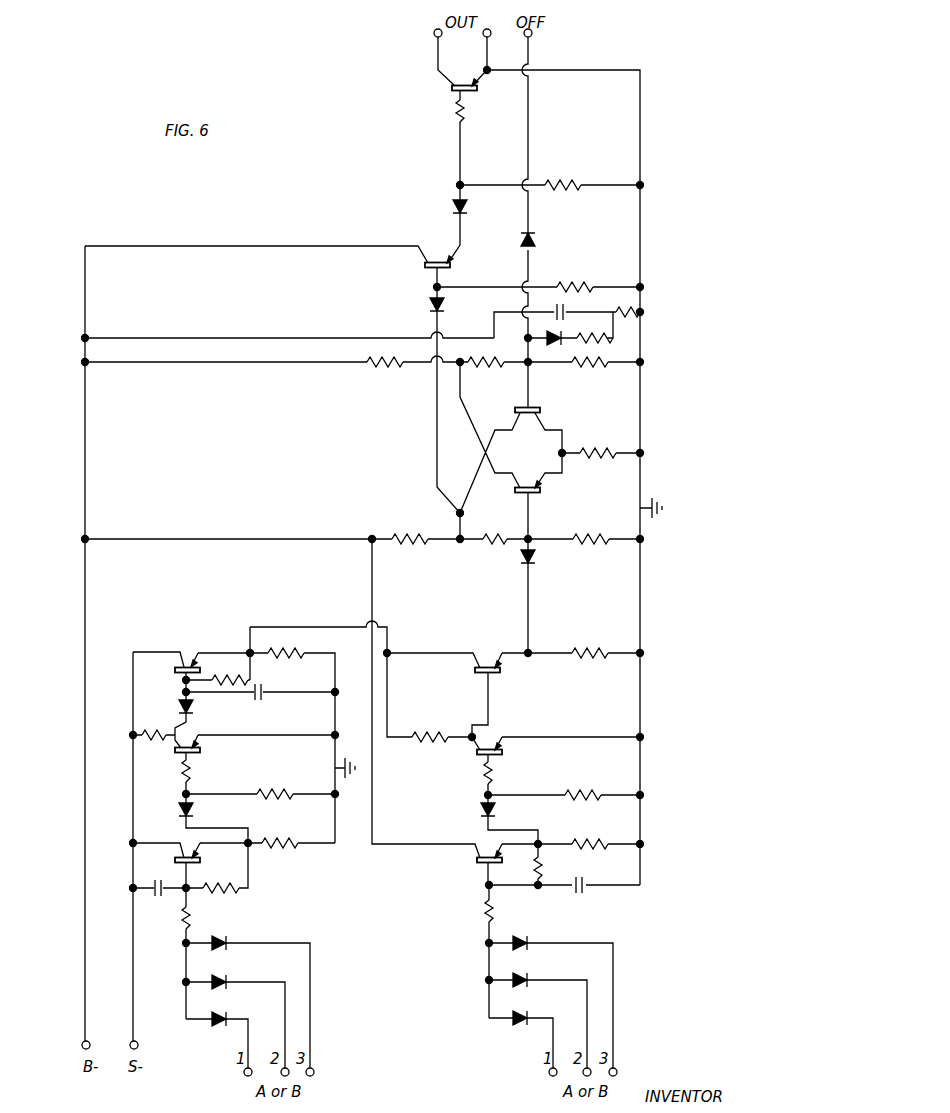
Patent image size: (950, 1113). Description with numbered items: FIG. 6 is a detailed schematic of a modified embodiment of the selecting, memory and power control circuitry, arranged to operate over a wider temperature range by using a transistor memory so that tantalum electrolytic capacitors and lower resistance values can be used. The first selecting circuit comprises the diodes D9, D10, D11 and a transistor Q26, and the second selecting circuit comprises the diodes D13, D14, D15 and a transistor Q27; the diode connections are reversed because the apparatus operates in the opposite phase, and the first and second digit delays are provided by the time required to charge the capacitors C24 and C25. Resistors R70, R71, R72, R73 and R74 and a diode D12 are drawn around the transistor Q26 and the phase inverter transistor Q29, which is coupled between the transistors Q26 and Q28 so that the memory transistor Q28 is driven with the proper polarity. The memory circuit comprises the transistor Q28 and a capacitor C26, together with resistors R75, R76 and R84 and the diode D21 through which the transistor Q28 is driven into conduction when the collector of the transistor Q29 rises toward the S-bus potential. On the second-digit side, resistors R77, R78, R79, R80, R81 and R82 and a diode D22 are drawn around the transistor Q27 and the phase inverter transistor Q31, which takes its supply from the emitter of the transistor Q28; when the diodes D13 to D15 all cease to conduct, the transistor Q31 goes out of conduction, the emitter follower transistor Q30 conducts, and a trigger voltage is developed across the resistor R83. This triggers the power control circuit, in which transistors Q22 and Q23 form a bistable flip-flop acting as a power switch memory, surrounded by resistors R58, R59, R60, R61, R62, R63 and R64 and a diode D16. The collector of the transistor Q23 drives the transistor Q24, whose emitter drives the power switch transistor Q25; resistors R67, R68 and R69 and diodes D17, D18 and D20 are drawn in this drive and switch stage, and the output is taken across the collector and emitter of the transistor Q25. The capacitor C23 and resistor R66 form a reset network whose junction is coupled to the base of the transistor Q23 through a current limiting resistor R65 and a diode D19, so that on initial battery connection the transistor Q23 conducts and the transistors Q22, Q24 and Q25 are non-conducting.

The power switch transistor Q25 is at (450, 92).
The resistor R68 is at (453, 118).
The resistor R69 is at (588, 165).
The diode D18 is at (452, 206).
The diode D20 is at (520, 245).
The transistor Q24 is at (422, 268).
The resistor R67 is at (592, 284).
The diode D17 is at (445, 306).
The capacitor C23 is at (552, 310).
The resistor R66 is at (620, 312).
The current limiting resistor R65 is at (583, 320).
The diode D19 is at (540, 338).
The resistor R64 is at (372, 370).
The resistor R63 is at (470, 370).
The resistor R62 is at (572, 370).
The transistor Q23 is at (540, 410).
The resistor R61 is at (582, 460).
The transistor Q22 is at (516, 490).
The resistor R59 is at (421, 544).
The resistor R58 is at (490, 545).
The resistor R60 is at (604, 545).
The diode D16 is at (522, 558).
The resistor R83 is at (607, 636).
The transistor Q30 is at (475, 673).
The resistor R82 is at (443, 726).
The transistor Q31 is at (476, 752).
The resistor R81 is at (496, 770).
The resistor R80 is at (604, 772).
The diode D22 is at (480, 812).
The resistor R79 is at (573, 840).
The transistor Q27 is at (476, 862).
The resistor R78 is at (542, 876).
The capacitor C25 is at (582, 896).
The resistor R77 is at (485, 912).
The diode D15 is at (510, 946).
The diode D14 is at (510, 983).
The diode D13 is at (510, 1021).
The transistor Q28 is at (182, 650).
The resistor R75 is at (236, 665).
The resistor R76 is at (298, 645).
The capacitor C26 is at (266, 698).
The diode D21 is at (190, 707).
The resistor R84 is at (152, 730).
The transistor Q29 is at (180, 755).
The resistor R74 is at (192, 770).
The resistor R73 is at (268, 805).
The diode D12 is at (180, 808).
The transistor Q26 is at (186, 852).
The resistor R72 is at (293, 848).
The resistor R71 is at (238, 891).
The capacitor C24 is at (163, 896).
The resistor R70 is at (192, 915).
The diode D11 is at (212, 945).
The diode D10 is at (212, 984).
The diode D9 is at (212, 1020).